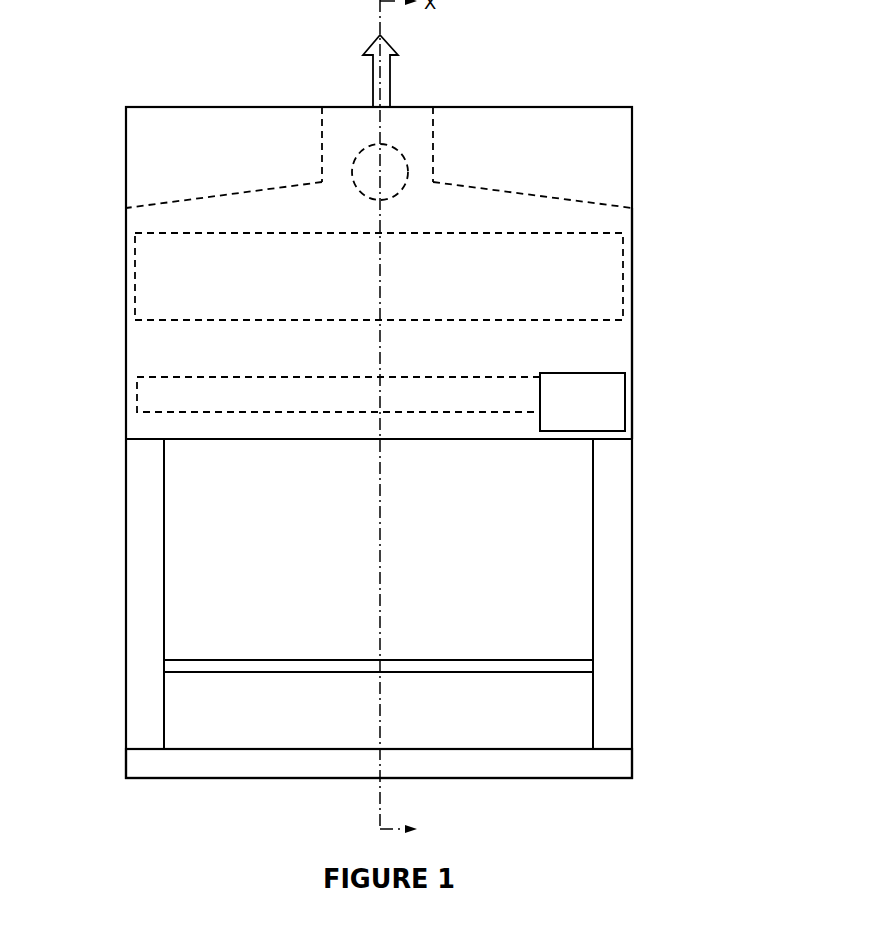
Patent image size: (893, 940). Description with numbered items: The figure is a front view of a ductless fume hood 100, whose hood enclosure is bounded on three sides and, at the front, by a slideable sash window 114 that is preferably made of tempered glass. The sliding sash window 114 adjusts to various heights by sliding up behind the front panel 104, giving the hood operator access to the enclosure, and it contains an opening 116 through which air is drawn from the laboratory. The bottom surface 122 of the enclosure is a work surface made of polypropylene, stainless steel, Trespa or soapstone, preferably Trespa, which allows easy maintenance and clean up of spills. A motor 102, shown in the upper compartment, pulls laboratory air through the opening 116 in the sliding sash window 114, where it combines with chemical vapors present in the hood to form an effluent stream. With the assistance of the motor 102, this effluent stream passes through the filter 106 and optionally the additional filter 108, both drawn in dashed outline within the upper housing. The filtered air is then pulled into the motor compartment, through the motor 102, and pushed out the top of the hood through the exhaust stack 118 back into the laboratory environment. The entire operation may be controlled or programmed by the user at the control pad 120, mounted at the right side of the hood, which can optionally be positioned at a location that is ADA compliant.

The ductless fume hood 100 is at (124, 72).
The motor 102 is at (405, 170).
The front panel 104 is at (633, 242).
The filter 106 is at (563, 280).
The filter 108 is at (175, 391).
The sliding sash window 114 is at (515, 520).
The opening 116 is at (525, 708).
The exhaust stack 118 is at (412, 112).
The control pad 120 is at (603, 407).
The bottom surface 122 is at (556, 763).